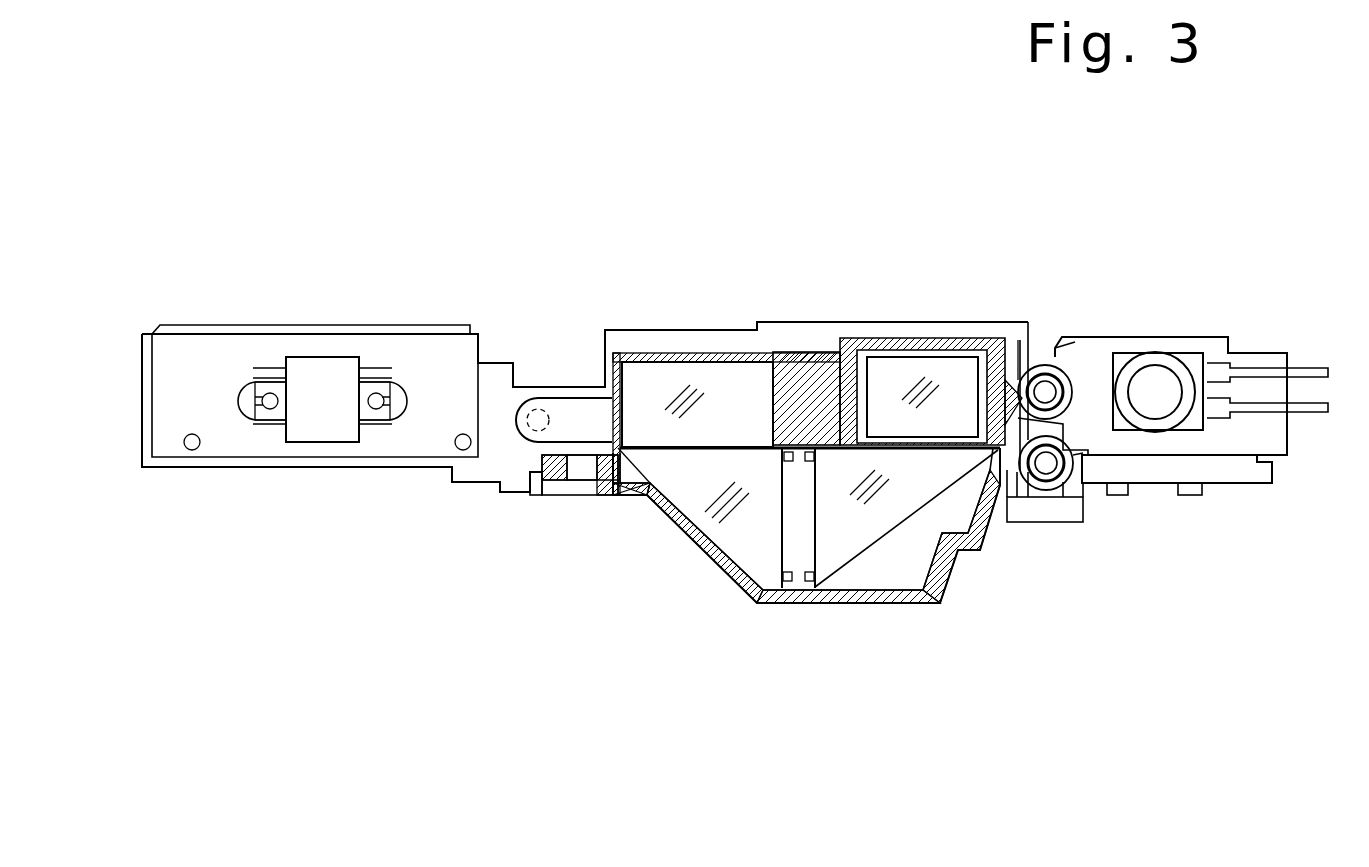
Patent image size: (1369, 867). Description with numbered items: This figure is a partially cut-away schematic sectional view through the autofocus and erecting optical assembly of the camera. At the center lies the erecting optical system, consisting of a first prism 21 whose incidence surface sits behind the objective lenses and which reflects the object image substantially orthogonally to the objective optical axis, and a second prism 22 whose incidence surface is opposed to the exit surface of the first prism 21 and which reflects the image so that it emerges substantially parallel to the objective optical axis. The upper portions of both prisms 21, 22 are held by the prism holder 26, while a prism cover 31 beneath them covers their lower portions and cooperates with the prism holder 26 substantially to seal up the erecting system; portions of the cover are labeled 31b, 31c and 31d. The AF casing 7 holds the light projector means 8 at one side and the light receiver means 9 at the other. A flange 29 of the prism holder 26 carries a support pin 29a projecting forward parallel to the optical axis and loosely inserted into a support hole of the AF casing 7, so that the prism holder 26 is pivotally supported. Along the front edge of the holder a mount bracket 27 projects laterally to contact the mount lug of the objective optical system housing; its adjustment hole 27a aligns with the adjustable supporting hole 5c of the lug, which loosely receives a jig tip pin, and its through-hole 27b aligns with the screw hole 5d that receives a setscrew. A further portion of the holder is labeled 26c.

The light receiver means 9 is at (328, 382).
The flange 29 is at (530, 394).
The support pin 29a is at (541, 418).
The AF casing 7 is at (802, 328).
The prism holder 26 is at (713, 353).
The mount bracket 27 is at (1070, 385).
The adjustment hole 27a is at (1020, 355).
The second prism 22 is at (750, 547).
The first prism 21 is at (885, 533).
The prism cover 31 is at (847, 603).
The support bracket 31c is at (552, 495).
The support bracket recess 31d is at (580, 472).
The adjustable supporting hole 5c is at (1045, 392).
The screw hole 5d is at (1046, 463).
The light projector means 8 is at (1155, 383).
The through-hole 27b is at (1040, 510).
The support wall 31b is at (1013, 488).
The lens projection 26c is at (1083, 453).